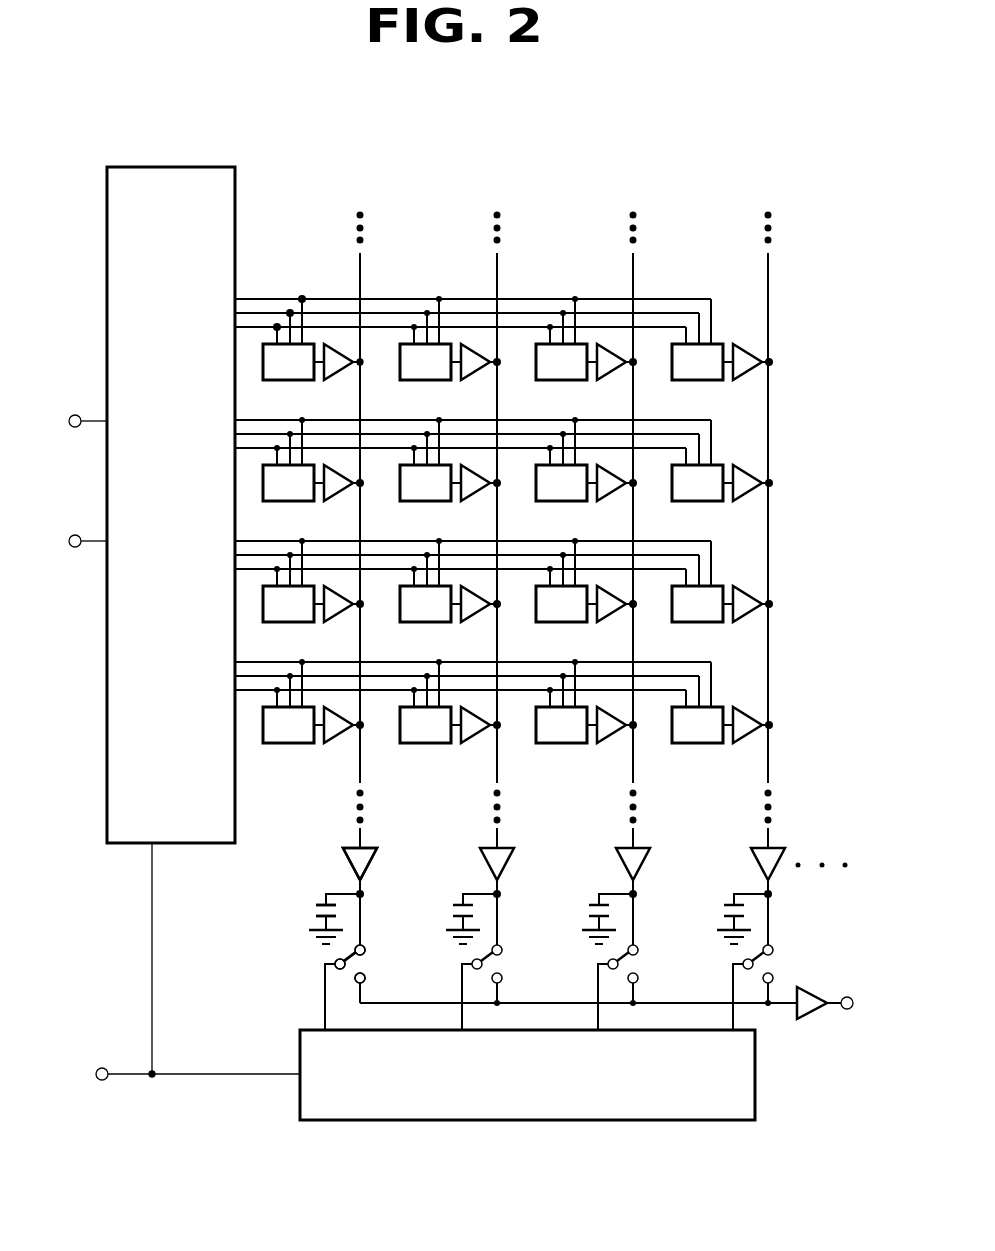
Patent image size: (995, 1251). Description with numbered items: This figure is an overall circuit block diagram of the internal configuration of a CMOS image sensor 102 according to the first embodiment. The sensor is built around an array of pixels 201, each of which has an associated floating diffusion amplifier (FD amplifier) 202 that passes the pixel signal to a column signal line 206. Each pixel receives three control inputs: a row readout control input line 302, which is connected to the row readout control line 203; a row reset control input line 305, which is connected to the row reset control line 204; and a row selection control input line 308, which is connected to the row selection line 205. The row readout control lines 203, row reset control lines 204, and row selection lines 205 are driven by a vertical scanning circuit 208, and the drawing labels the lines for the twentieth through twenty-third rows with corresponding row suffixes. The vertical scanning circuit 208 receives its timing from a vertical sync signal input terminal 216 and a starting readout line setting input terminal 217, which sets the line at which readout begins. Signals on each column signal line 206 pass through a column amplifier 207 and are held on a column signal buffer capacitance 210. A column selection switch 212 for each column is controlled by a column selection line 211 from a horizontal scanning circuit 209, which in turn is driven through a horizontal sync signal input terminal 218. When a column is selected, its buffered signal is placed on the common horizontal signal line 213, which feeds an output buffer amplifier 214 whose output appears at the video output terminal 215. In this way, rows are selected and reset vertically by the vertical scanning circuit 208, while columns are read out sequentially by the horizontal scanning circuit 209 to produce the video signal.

The image sensor / pixel array 102 is at (580, 162).
The vertical scanning circuit 208 is at (192, 166).
The vertical sync signal input terminal 216 is at (74, 414).
The starting readout line setting input terminal 217 is at (74, 534).
The horizontal sync signal input terminal 218 is at (98, 1067).
The pixel 201 is at (290, 381).
The floating diffusion amplifier 202 is at (340, 378).
The row reset control input line 305 is at (288, 318).
The row selection control input line 308 is at (276, 330).
The row readout control input line 302 is at (303, 330).
The row readout control line 203 is at (392, 299).
The row reset control line 204 is at (534, 313).
The row selection line 205 is at (668, 326).
The column signal line 206 is at (358, 765).
The column amplifier 207 is at (372, 868).
The column signal buffer capacitance 210 is at (316, 914).
The column selection line 211 is at (323, 984).
The column selection switch 212 is at (363, 968).
The horizontal signal line 213 is at (545, 1003).
The output buffer amplifier 214 is at (817, 988).
The video output terminal 215 is at (846, 1010).
The horizontal scanning circuit 209 is at (757, 1094).